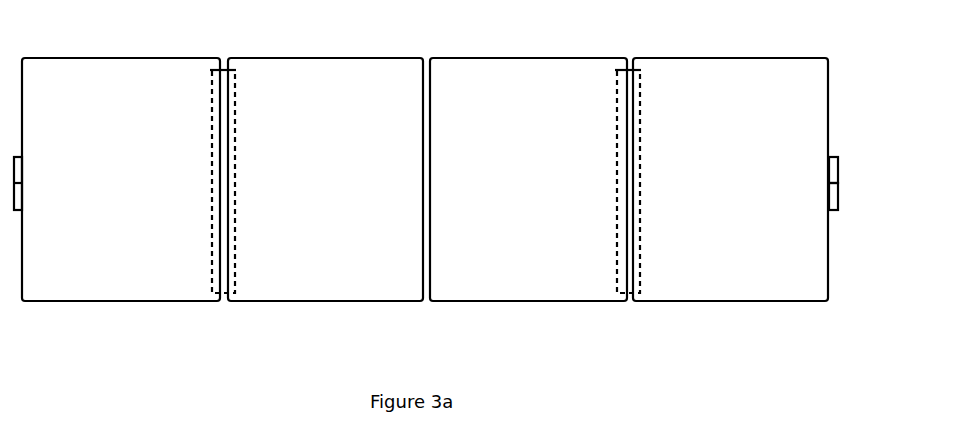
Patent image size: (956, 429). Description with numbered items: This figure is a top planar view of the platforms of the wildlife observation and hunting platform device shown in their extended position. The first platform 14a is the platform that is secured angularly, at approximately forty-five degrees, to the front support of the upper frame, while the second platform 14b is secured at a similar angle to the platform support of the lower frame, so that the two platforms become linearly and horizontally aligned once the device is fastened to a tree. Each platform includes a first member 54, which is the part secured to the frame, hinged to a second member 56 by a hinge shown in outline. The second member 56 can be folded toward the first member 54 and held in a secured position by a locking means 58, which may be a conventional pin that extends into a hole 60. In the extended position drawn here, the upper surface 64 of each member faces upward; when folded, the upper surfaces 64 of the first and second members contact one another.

The first platform 14a is at (703, 74).
The second platform 14b is at (361, 72).
The first member 54 is at (327, 284).
The second member 56 is at (113, 275).
The locking means 58 is at (835, 158).
The hole 60 is at (835, 210).
The upper surface 64 is at (768, 284).